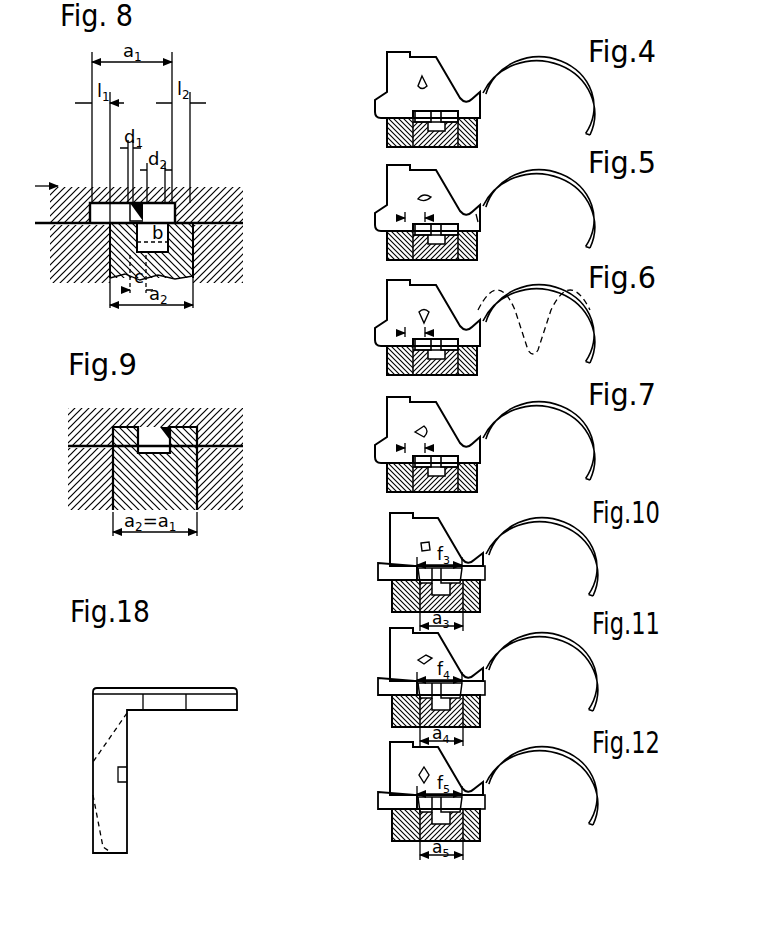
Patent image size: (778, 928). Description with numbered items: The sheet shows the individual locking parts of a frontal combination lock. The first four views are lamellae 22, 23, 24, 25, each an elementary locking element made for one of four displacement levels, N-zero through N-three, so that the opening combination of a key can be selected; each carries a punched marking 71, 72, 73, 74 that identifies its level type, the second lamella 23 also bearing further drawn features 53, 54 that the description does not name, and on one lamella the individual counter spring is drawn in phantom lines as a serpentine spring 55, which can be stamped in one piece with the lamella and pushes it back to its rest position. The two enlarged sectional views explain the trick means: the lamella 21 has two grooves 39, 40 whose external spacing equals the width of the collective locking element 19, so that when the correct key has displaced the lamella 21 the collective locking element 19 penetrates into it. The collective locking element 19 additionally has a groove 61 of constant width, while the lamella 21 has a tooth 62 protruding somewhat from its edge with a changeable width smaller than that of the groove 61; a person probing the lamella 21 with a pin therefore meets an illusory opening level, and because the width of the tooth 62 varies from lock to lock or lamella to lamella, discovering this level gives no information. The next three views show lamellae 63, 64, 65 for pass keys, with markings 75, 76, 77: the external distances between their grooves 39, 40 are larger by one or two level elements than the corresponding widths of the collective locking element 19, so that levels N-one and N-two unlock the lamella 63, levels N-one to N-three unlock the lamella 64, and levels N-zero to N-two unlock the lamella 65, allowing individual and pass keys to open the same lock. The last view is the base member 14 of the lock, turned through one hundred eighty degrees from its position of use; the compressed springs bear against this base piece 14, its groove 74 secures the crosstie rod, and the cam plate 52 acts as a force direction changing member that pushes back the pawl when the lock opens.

In FIG. 18, the base member 14 is at (99, 712).
In FIG. 8, the collective locking element 19 is at (170, 277).
In FIG. 9, the collective locking element 19 is at (185, 510).
In FIG. 10, the collective locking element 19 is at (392, 600).
In FIG. 11, the collective locking element 19 is at (392, 716).
In FIG. 12, the collective locking element 19 is at (410, 838).
In FIG. 8, the lamella 21 is at (197, 190).
In FIG. 9, the lamella 21 is at (102, 413).
In FIG. 4, the lamella 22 is at (427, 87).
In FIG. 5, the lamella 23 is at (427, 200).
In FIG. 6, the lamella 24 is at (427, 315).
In FIG. 7, the lamella 25 is at (427, 432).
In FIG. 8, the groove 39 is at (90, 218).
In FIG. 10, the groove 39 is at (380, 565).
In FIG. 11, the groove 39 is at (380, 688).
In FIG. 12, the groove 39 is at (380, 802).
In FIG. 8, the groove 40 is at (210, 213).
In FIG. 10, the groove 40 is at (455, 577).
In FIG. 11, the groove 40 is at (455, 691).
In FIG. 12, the groove 40 is at (455, 805).
In FIG. 18, the cam plate 52 is at (110, 869).
In FIG. 5, the gap 53 is at (476, 214).
In FIG. 5, the hook 54 is at (541, 170).
In FIG. 6, the serpentine counter spring 55 is at (550, 330).
In FIG. 8, the groove 61 is at (185, 247).
In FIG. 9, the groove 61 is at (140, 440).
In FIG. 8, the tooth 62 is at (133, 213).
In FIG. 9, the tooth 62 is at (166, 422).
In FIG. 10, the lamella 63 is at (436, 539).
In FIG. 11, the lamella 64 is at (436, 654).
In FIG. 12, the lamella 65 is at (436, 768).
In FIG. 4, the punched marking 71 is at (426, 80).
In FIG. 5, the punched marking 72 is at (428, 196).
In FIG. 6, the punched marking 73 is at (428, 316).
In FIG. 18, the punched marking 74 is at (123, 777).
In FIG. 7, the punched marking 74 is at (426, 431).
In FIG. 10, the punched marking 75 is at (430, 546).
In FIG. 11, the punched marking 76 is at (430, 659).
In FIG. 12, the punched marking 77 is at (429, 773).